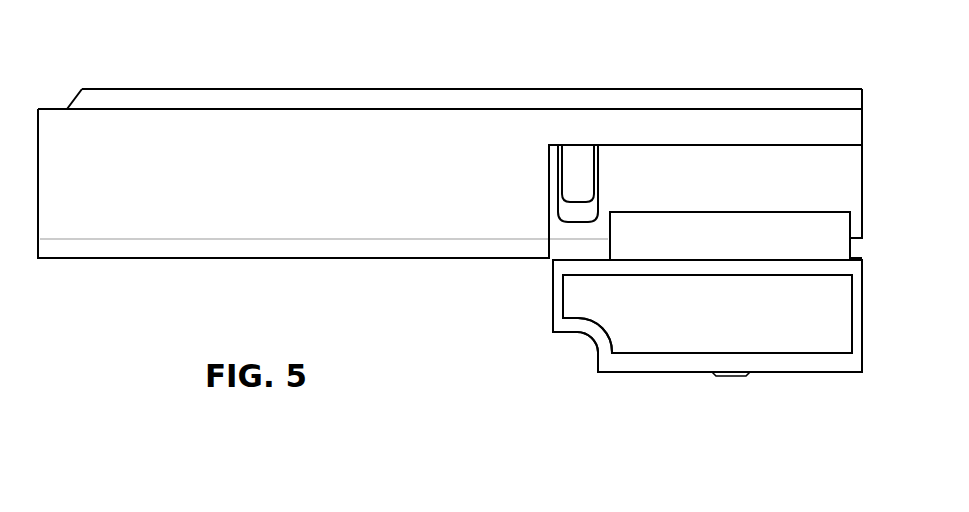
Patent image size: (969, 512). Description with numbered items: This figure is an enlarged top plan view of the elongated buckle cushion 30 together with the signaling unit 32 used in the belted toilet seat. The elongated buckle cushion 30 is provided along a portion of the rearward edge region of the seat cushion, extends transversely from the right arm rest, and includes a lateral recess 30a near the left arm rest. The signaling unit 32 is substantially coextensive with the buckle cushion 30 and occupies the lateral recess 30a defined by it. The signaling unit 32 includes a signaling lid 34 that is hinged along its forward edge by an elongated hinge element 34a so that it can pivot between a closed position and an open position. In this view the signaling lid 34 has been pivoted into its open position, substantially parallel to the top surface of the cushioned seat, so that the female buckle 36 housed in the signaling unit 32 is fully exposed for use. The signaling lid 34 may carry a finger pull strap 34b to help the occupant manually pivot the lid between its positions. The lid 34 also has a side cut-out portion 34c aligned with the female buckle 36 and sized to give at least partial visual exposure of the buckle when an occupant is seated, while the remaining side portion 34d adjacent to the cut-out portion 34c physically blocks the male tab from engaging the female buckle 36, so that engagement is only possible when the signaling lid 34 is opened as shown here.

The elongated buckle cushion 30 is at (207, 180).
The lateral recess 30a is at (553, 211).
The signaling unit 32 is at (808, 192).
The signaling lid 34 is at (778, 357).
The elongated hinge element 34a is at (706, 249).
The finger pull strap 34b is at (720, 376).
The side cut-out portion 34c is at (593, 337).
The remaining side portion 34d is at (556, 295).
The female buckle 36 is at (582, 170).